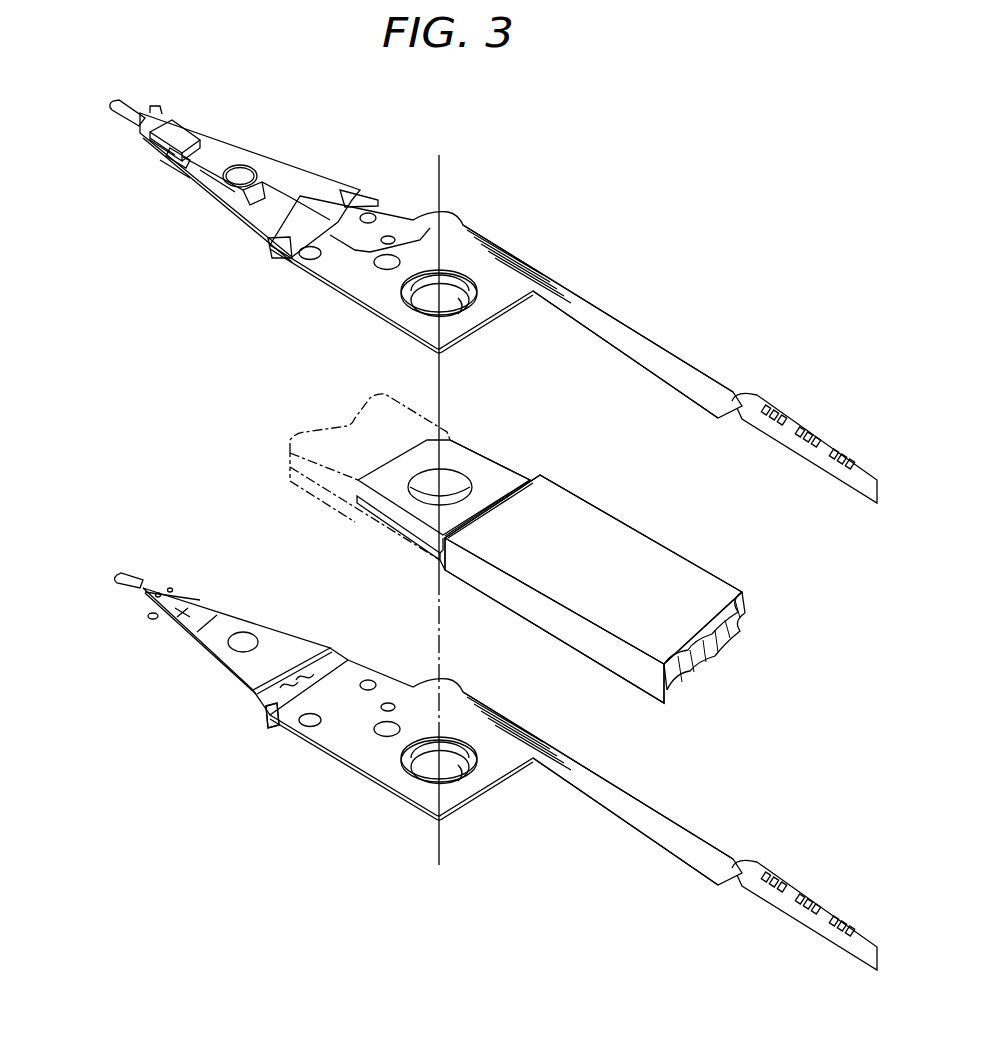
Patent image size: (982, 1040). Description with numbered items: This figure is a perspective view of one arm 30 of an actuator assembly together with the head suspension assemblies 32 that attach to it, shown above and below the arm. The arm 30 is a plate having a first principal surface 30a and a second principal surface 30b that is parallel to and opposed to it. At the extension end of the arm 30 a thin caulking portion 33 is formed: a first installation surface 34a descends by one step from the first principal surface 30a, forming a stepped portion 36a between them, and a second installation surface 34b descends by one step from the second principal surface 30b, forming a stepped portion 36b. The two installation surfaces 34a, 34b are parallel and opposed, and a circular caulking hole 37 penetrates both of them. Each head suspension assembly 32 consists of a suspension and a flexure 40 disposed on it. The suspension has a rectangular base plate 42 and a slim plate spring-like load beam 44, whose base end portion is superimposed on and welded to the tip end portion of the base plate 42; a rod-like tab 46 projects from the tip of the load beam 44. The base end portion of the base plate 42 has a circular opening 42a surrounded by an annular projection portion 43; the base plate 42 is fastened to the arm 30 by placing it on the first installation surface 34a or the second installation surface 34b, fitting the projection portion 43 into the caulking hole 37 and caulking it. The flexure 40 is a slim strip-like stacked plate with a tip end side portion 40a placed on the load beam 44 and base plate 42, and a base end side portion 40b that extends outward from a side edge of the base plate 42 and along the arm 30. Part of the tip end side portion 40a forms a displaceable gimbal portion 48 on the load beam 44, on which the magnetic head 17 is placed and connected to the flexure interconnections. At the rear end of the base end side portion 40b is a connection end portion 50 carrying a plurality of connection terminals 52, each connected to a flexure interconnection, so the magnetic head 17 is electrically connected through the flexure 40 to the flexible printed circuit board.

The magnetic head 17 is at (185, 130).
The arm 30 is at (622, 511).
The first principal surface 30a is at (665, 567).
The second principal surface 30b is at (525, 620).
The head suspension assembly 32 is at (404, 195).
The caulking portion 33 is at (380, 492).
The first installation surface 34a is at (470, 463).
The second installation surface 34b is at (377, 526).
The stepped portion 36a is at (505, 485).
The stepped portion 36b is at (437, 568).
The caulking hole 37 is at (423, 492).
The flexure 40 is at (542, 265).
The tip end side portion 40a is at (297, 234).
The base end side portion 40b is at (664, 344).
The base plate 42 is at (358, 283).
The opening 42a is at (427, 300).
The projection portion 43 is at (476, 296).
The load beam 44 is at (253, 213).
The tab 46 is at (112, 106).
The gimbal portion 48 is at (183, 160).
The connection end portion 50 is at (803, 413).
The connection terminals 52 is at (768, 418).